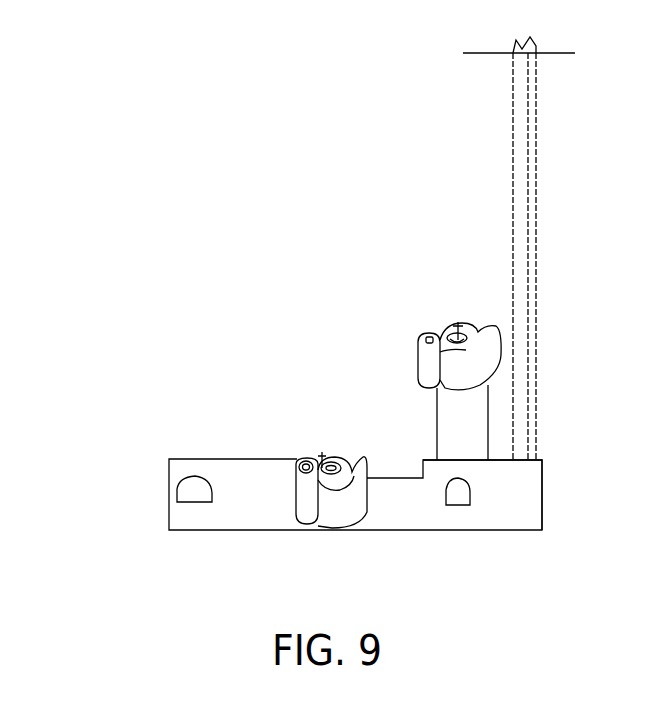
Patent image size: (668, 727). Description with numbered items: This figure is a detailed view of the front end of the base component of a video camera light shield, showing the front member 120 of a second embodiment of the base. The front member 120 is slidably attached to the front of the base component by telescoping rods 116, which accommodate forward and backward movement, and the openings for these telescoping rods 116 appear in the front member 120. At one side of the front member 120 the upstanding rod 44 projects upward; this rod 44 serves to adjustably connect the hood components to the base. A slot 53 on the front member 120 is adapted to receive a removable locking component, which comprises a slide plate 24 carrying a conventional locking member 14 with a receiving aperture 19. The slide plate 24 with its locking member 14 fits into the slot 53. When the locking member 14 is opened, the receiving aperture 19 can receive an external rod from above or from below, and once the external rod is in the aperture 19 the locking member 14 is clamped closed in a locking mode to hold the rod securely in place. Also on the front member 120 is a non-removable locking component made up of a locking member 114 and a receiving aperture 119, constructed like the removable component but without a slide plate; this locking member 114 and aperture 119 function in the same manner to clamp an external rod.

The locking member 14 is at (468, 255).
The receiving aperture 19 is at (434, 286).
The slide plate 24 is at (405, 370).
The upstanding rod 44 is at (555, 248).
The slot 53 is at (530, 452).
The locking member 114 is at (304, 401).
The telescoping rods 116 is at (345, 448).
The receiving aperture 119 is at (383, 535).
The front member 120 is at (355, 540).